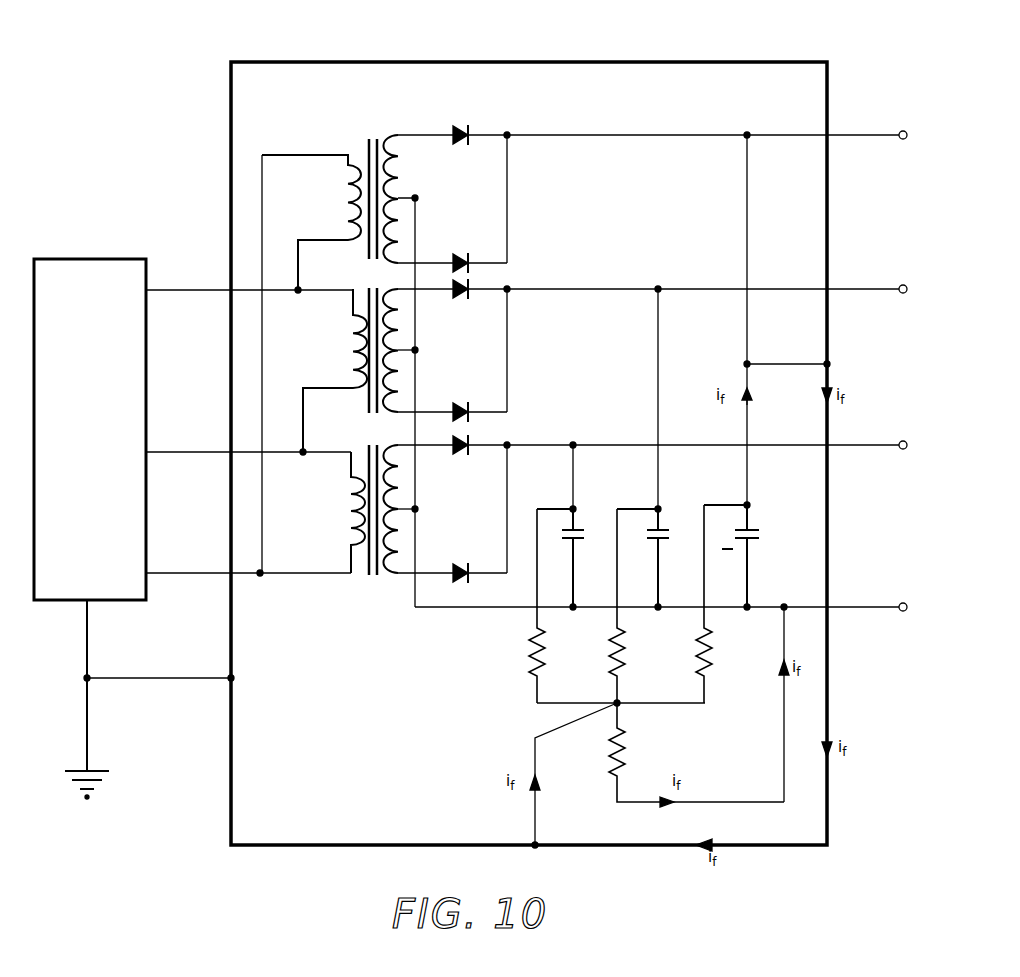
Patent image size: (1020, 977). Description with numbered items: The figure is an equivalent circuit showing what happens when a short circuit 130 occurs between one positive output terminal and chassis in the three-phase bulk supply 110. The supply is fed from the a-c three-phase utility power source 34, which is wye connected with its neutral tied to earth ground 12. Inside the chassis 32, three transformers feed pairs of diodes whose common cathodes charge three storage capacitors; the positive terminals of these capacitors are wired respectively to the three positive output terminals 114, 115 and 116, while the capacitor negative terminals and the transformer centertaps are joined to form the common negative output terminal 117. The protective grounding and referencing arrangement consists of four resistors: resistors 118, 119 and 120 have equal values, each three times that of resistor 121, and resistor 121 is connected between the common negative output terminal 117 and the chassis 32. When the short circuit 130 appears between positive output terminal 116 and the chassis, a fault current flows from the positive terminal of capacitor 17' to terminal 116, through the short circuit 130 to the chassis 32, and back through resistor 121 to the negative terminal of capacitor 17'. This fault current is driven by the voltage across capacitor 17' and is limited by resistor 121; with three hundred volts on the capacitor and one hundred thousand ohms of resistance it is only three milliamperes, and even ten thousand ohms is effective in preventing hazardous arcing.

The bulk supply 110 is at (820, 46).
The chassis 32 is at (698, 42).
The three-phase utility power source 34 is at (90, 429).
The earth ground 12 is at (72, 772).
The positive output terminal 116 is at (902, 130).
The positive output terminal 115 is at (906, 284).
The positive output terminal 114 is at (902, 442).
The common negative output terminal 117 is at (902, 602).
The short circuit 130 is at (794, 342).
The capacitor 17' is at (752, 550).
The resistor 118 is at (528, 655).
The resistor 119 is at (616, 655).
The resistor 120 is at (702, 655).
The resistor 121 is at (617, 750).